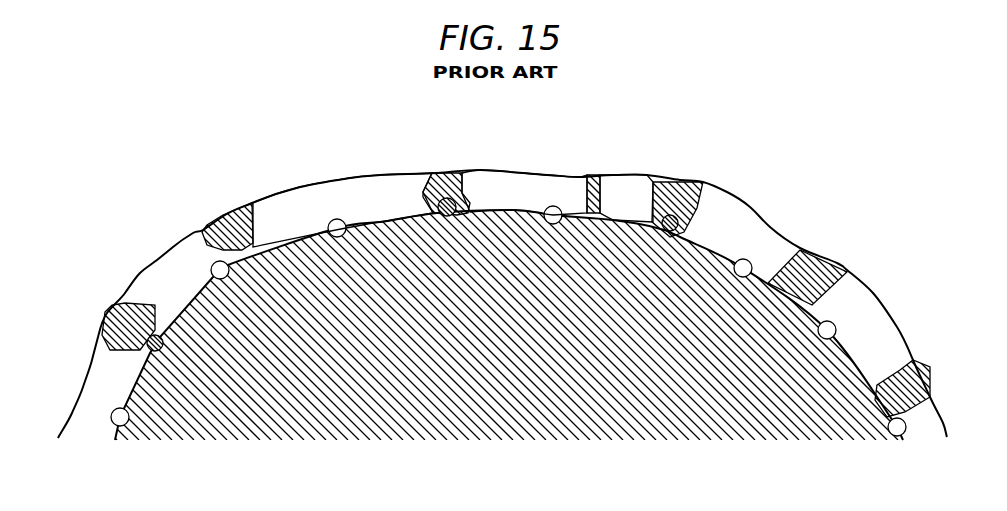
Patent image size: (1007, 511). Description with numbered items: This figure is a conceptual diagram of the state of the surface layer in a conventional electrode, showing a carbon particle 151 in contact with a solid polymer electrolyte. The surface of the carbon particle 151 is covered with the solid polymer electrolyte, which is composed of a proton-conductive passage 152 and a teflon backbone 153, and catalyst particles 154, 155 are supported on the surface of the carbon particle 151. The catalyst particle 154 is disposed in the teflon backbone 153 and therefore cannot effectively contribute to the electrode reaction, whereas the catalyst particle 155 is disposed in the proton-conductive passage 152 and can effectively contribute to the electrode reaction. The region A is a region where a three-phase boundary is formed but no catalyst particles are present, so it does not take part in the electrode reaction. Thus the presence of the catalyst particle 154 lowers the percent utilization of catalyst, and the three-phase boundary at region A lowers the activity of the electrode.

The carbon particle 151 is at (329, 262).
The proton-conductive passage 152 is at (241, 222).
The teflon backbone 153 is at (327, 185).
The catalyst particle 154 is at (353, 208).
The catalyst particle 155 is at (679, 207).
The region A is at (793, 286).